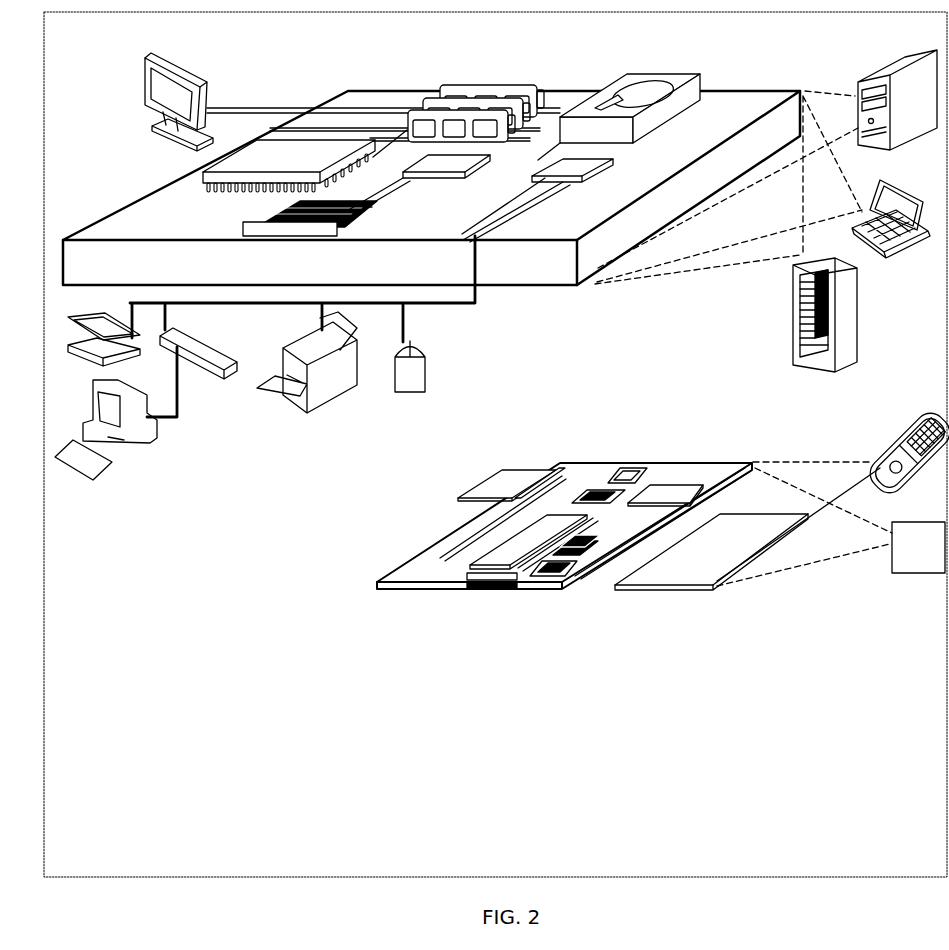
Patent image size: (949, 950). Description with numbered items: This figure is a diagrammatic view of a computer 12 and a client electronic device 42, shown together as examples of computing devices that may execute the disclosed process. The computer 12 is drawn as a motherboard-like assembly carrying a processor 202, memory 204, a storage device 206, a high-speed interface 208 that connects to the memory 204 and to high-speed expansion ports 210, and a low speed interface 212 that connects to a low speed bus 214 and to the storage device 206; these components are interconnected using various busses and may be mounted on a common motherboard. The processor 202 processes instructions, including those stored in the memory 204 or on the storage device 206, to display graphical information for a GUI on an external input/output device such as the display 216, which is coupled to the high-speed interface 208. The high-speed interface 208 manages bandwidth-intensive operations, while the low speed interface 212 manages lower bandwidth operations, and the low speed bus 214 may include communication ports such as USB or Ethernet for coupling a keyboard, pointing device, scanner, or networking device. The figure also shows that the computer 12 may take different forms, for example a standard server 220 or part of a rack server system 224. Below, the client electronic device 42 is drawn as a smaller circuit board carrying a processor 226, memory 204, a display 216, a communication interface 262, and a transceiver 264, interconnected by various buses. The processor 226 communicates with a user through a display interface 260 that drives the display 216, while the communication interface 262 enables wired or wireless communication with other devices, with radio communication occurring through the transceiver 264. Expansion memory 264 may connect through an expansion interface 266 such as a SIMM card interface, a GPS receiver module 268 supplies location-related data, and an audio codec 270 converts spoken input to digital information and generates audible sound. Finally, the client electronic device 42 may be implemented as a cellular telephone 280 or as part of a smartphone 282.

The computer 12 is at (294, 69).
The client electronic device 42 is at (546, 440).
The processor 202 is at (203, 178).
The memory 204 is at (457, 85).
The storage device 206 is at (630, 74).
The high-speed interface 208 is at (395, 165).
The high-speed expansion ports 210 is at (253, 220).
The low speed interface 212 is at (573, 168).
The low speed bus 214 is at (487, 242).
The display 216 is at (140, 58).
The standard server 220 is at (857, 78).
The rack server system 224 is at (792, 333).
The processor 226 is at (503, 582).
The display interface 260 is at (597, 572).
The communication interface 262 is at (487, 589).
The transceiver 264 is at (490, 477).
The expansion interface 266 is at (540, 473).
The GPS receiver module 268 is at (632, 466).
The audio codec 270 is at (615, 573).
The cellular telephone 280 is at (922, 422).
The smartphone 282 is at (898, 522).